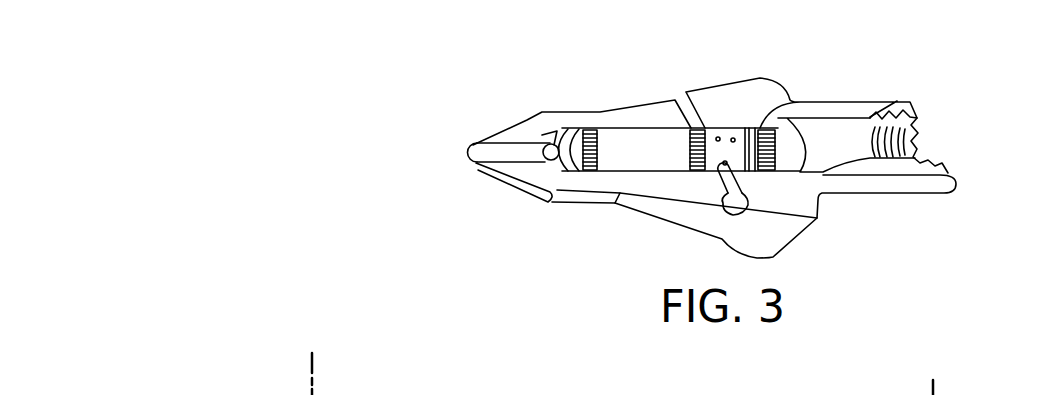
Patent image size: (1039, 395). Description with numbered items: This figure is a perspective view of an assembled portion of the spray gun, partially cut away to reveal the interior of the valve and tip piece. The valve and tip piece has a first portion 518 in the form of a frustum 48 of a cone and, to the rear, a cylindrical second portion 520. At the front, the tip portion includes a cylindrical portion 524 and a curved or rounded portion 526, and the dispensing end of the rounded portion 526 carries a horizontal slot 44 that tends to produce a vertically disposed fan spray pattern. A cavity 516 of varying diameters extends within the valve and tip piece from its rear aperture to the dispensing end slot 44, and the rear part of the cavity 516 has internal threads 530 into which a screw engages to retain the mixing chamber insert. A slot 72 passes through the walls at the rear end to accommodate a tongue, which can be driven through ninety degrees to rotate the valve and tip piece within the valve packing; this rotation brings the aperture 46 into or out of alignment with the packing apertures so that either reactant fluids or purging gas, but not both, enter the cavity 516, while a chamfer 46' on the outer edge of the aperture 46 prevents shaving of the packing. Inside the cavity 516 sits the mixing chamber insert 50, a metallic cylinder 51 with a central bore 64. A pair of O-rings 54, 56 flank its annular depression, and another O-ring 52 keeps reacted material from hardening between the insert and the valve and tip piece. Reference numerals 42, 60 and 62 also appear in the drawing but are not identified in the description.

The distal tip 42 is at (493, 156).
The horizontal slot 44 is at (470, 163).
The aperture 46 is at (746, 237).
The chamfer 46' is at (702, 246).
The frustum of a cone 48 is at (778, 239).
The mixing chamber insert 50 is at (610, 150).
The metallic cylinder 51 is at (642, 140).
The O-ring 52 is at (575, 137).
The O-ring 54 is at (693, 150).
The O-ring 56 is at (783, 98).
The tube 60 is at (725, 163).
The knurled sleeve 62 is at (720, 128).
The central bore 64 is at (554, 147).
The slot 72 is at (912, 106).
The cavity 516 is at (845, 125).
The first portion 518 is at (757, 62).
The second portion 520 is at (873, 206).
The cylindrical portion 524 is at (587, 200).
The rounded portion 526 is at (530, 197).
The internal threads 530 is at (913, 130).